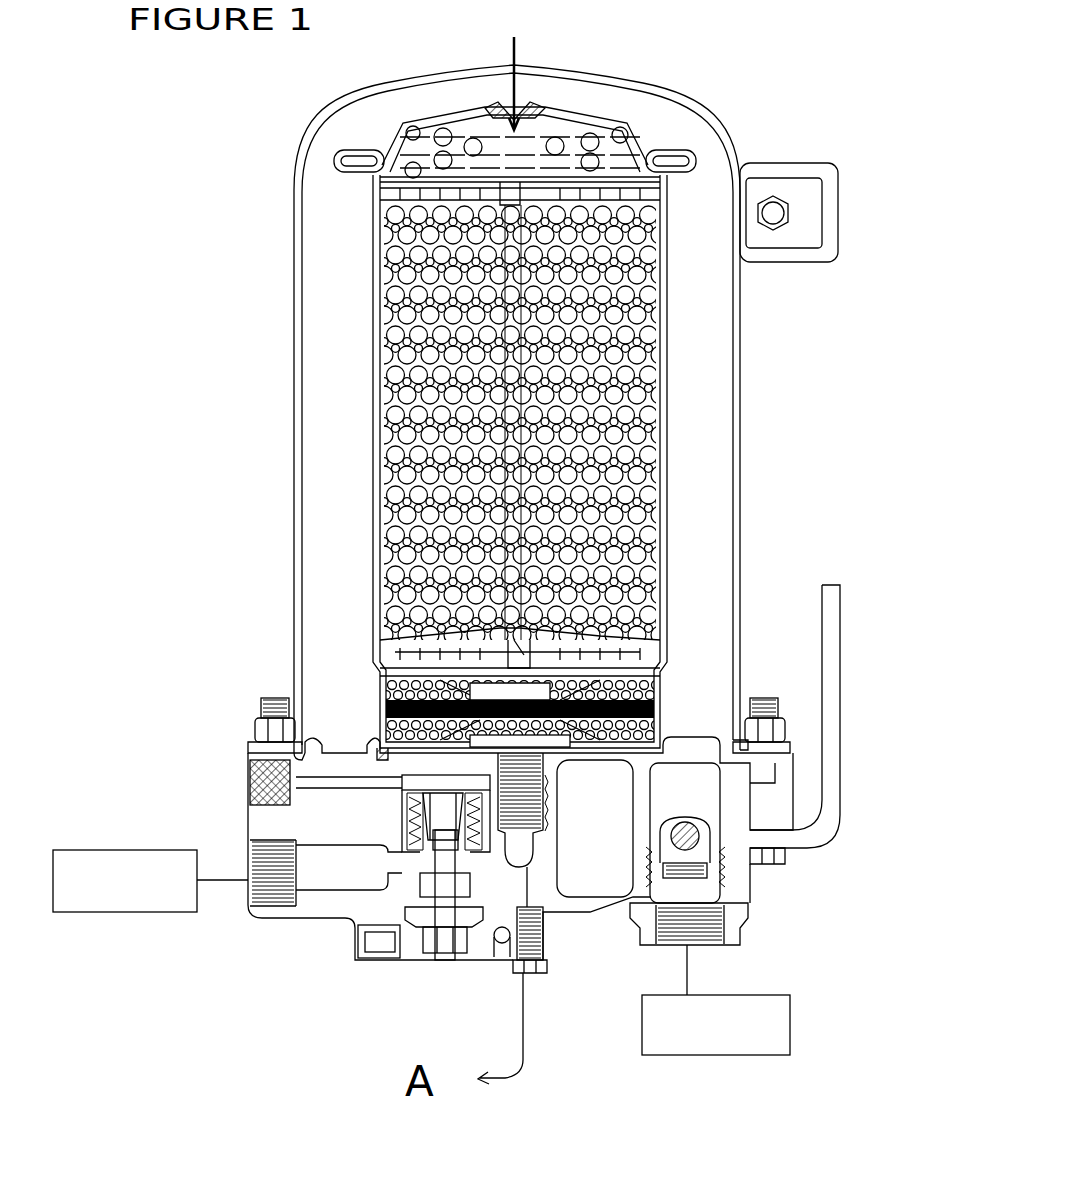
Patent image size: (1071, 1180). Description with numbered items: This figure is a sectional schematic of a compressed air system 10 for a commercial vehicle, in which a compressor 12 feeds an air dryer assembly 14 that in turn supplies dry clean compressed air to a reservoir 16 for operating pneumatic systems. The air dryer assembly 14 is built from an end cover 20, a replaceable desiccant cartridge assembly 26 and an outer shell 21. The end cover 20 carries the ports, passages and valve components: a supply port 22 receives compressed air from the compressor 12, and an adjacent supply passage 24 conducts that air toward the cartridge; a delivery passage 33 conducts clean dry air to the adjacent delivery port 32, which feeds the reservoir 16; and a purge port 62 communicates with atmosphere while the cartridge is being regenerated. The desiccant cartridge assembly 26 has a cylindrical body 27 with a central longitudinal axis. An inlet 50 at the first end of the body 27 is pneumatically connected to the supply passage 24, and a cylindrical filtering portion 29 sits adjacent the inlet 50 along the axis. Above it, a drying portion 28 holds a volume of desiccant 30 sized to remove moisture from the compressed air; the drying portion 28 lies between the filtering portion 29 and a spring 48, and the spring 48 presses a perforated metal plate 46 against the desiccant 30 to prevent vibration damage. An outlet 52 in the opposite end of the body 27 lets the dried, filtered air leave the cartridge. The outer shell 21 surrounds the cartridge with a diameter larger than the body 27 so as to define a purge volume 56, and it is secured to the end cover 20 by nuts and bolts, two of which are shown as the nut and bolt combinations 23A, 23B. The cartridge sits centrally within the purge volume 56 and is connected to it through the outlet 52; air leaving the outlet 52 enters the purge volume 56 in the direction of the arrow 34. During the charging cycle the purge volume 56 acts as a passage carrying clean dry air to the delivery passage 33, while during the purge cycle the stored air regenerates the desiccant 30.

The compressed air system 10 is at (178, 1007).
The compressor 12 is at (150, 881).
The air dryer assembly 14 is at (689, 58).
The reservoir 16 is at (716, 1000).
The end cover 20 is at (238, 820).
The outer shell 21 is at (293, 520).
The supply port 22 is at (275, 918).
The nut and bolt combination 23A is at (255, 727).
The nut and bolt combination 23B is at (784, 727).
The supply passage 24 is at (330, 885).
The replaceable desiccant cartridge assembly 26 is at (708, 369).
The cylindrical body 27 is at (690, 428).
The drying portion 28 is at (690, 468).
The cylindrical filtering portion 29 is at (678, 702).
The desiccant 30 is at (346, 873).
The delivery port 32 is at (750, 928).
The delivery passage 33 is at (725, 877).
The air flow path 34 is at (697, 520).
The perforated metal plate 46 is at (667, 170).
The spring 48 is at (641, 132).
The inlet 50 is at (380, 707).
The outlet 52 is at (518, 118).
The purge volume 56 is at (327, 352).
The purge port 62 is at (412, 960).